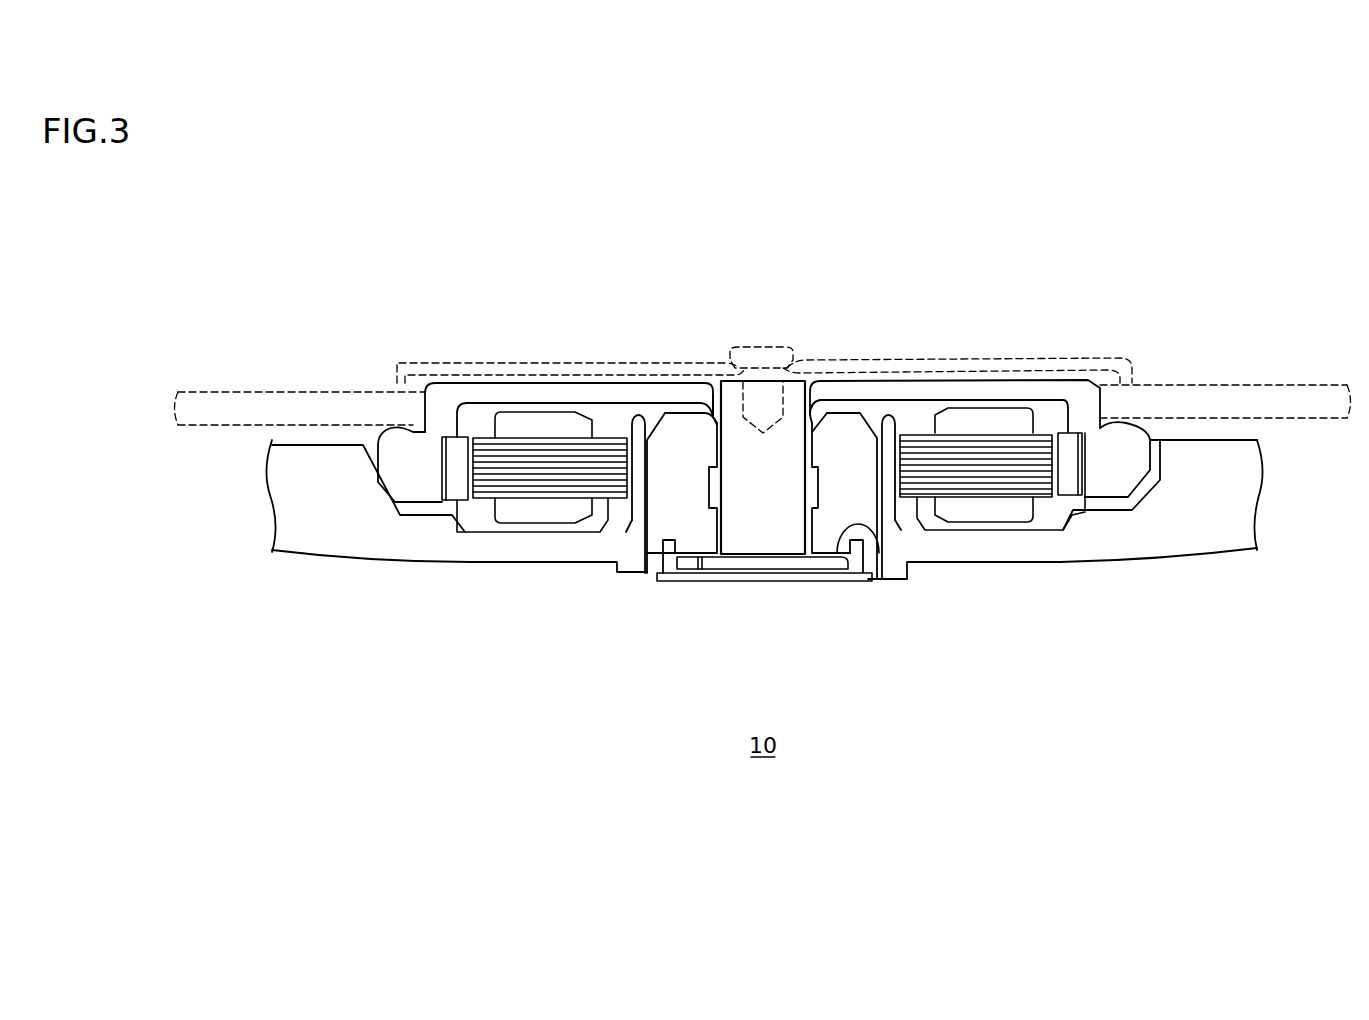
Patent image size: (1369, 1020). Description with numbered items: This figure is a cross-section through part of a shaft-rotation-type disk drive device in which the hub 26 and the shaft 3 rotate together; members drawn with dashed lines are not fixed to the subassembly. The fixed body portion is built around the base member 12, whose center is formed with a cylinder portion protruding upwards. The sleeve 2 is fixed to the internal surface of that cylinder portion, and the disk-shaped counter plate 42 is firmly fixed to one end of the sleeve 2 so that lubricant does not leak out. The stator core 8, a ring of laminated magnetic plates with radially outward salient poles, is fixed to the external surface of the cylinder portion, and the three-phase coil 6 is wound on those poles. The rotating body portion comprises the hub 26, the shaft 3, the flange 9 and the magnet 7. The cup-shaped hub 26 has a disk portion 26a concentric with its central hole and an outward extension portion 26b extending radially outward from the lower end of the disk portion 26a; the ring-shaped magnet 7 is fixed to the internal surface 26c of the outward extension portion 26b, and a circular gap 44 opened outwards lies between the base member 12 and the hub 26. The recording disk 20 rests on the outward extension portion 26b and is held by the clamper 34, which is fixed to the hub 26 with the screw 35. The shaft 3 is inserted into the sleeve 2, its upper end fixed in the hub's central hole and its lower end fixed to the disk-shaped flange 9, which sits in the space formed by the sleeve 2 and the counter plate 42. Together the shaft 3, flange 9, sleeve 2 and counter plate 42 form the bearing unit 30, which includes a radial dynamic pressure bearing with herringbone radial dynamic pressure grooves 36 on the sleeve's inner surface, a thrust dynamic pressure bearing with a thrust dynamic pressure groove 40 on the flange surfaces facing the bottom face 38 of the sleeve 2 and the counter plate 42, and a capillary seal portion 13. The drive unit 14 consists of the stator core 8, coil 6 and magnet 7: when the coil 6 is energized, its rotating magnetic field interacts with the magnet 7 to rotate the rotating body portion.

The sleeve 2 is at (698, 532).
The shaft 3 is at (768, 517).
The coil 6 is at (1020, 512).
The magnet 7 is at (1070, 485).
The stator core 8 is at (963, 472).
The flange 9 is at (855, 572).
The base member 12 is at (1147, 547).
The capillary seal portion 13 is at (710, 412).
The drive unit 14 is at (480, 512).
The recording disk 20 is at (1222, 400).
The hub 26 is at (1040, 381).
The disk portion 26a is at (498, 388).
The outward extension portion 26b is at (398, 428).
The internal surface 26c is at (1090, 470).
The bearing unit 30 is at (682, 596).
The clamper 34 is at (893, 358).
The screw 35 is at (762, 350).
The radial dynamic pressure groove 36 is at (712, 522).
The bottom face 38 is at (879, 553).
The thrust dynamic pressure groove 40 is at (828, 558).
The counter plate 42 is at (705, 580).
The gap 44 is at (1157, 438).